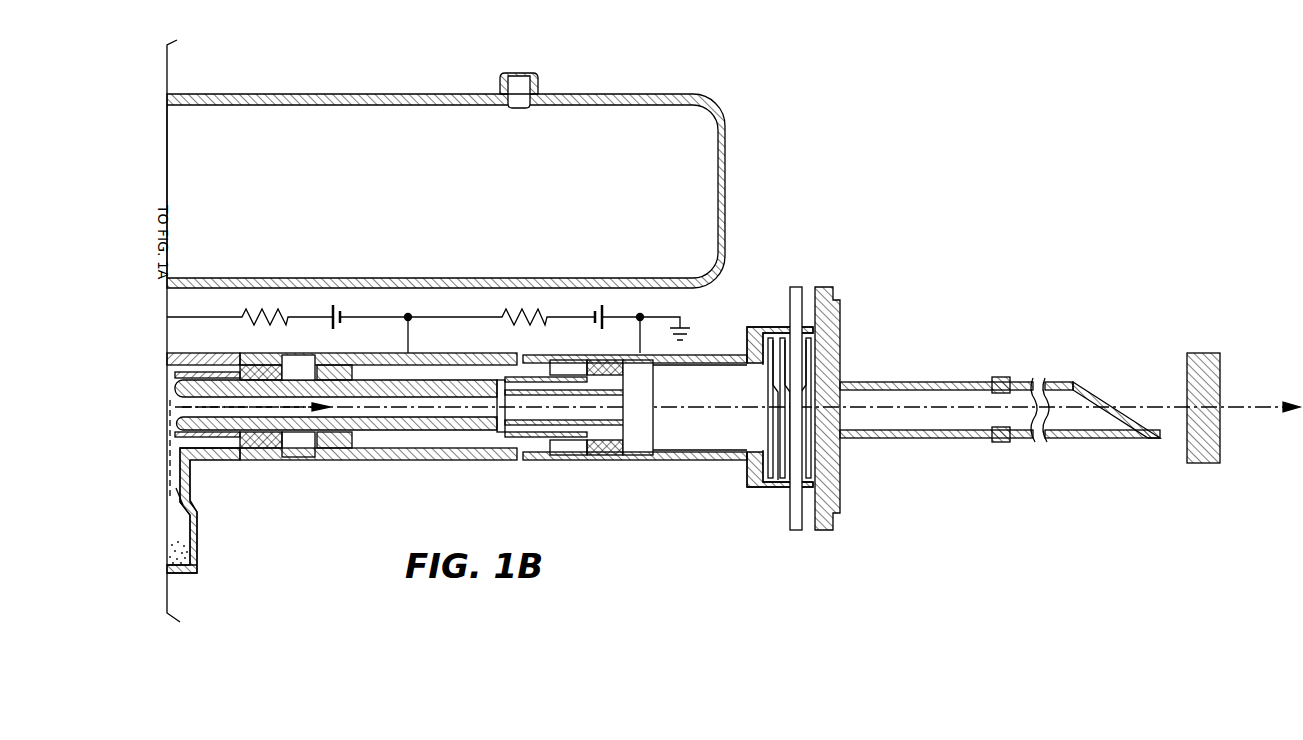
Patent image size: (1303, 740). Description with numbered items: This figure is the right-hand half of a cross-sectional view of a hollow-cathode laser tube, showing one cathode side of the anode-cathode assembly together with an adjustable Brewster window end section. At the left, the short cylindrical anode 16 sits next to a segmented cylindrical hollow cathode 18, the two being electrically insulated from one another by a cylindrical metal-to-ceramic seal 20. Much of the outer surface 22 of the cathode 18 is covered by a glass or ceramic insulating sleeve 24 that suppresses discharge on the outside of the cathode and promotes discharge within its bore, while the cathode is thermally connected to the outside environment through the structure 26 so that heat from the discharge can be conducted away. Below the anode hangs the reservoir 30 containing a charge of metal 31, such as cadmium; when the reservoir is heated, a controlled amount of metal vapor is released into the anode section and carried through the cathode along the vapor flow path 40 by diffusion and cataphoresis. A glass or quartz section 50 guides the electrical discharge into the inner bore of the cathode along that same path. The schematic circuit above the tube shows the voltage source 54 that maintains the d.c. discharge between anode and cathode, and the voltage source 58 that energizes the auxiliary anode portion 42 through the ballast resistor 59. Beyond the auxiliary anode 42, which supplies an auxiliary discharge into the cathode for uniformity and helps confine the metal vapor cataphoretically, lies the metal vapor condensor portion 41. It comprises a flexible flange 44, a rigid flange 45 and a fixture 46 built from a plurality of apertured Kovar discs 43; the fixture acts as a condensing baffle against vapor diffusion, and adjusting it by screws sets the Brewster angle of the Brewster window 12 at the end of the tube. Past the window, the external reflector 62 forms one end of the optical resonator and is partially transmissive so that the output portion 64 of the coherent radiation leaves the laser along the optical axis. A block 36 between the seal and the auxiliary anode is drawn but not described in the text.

The Brewster window 12 is at (1105, 394).
The anode 16 is at (172, 358).
The hollow cathode 18 is at (338, 360).
The metal-to-ceramic seal 20 is at (300, 368).
The outer surface of cathode 22 is at (297, 462).
The insulating sleeve 24 is at (210, 375).
The structure 26 is at (338, 462).
The reservoir 30 is at (198, 566).
The metal 31 is at (322, 96).
The coupling block 36 is at (648, 462).
The vapor flow path 40 is at (186, 487).
The metal vapor condensor portion 41 is at (840, 502).
The auxiliary anode portion 42 is at (716, 358).
The apertured Kovar disc 43 is at (810, 322).
The flexible flange 44 is at (840, 480).
The rigid flange 45 is at (790, 500).
The fixture 46 is at (835, 355).
The discharge guide section 50 is at (562, 425).
The voltage source 54 is at (333, 312).
The voltage source 58 is at (595, 315).
The ballast resistor 59 is at (506, 316).
The reflector 62 is at (1222, 448).
The output radiation 64 is at (1238, 410).